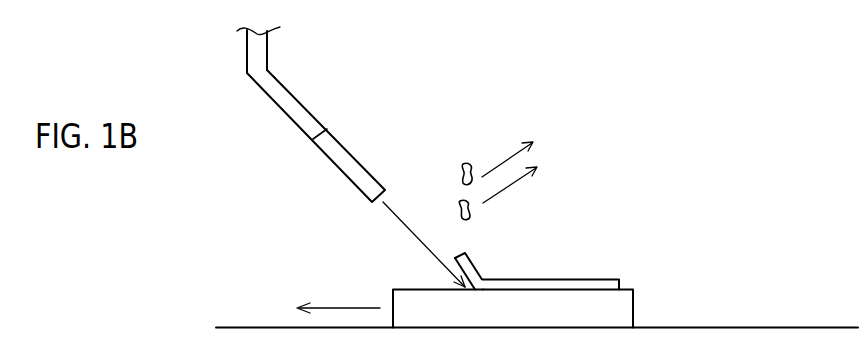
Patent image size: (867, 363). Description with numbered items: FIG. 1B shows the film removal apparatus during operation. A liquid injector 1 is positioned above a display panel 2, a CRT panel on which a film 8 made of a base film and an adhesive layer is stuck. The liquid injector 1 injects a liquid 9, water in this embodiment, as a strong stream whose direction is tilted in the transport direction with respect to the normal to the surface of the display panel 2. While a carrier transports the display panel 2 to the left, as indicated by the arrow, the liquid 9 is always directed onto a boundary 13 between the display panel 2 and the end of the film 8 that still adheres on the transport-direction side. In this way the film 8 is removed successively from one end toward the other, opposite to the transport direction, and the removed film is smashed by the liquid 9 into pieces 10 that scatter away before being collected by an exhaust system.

The liquid injector 1 is at (342, 170).
The display panel 2 is at (622, 310).
The film 8 is at (548, 278).
The liquid 9 is at (410, 230).
The pieces 10 is at (467, 162).
The boundary 13 is at (483, 290).